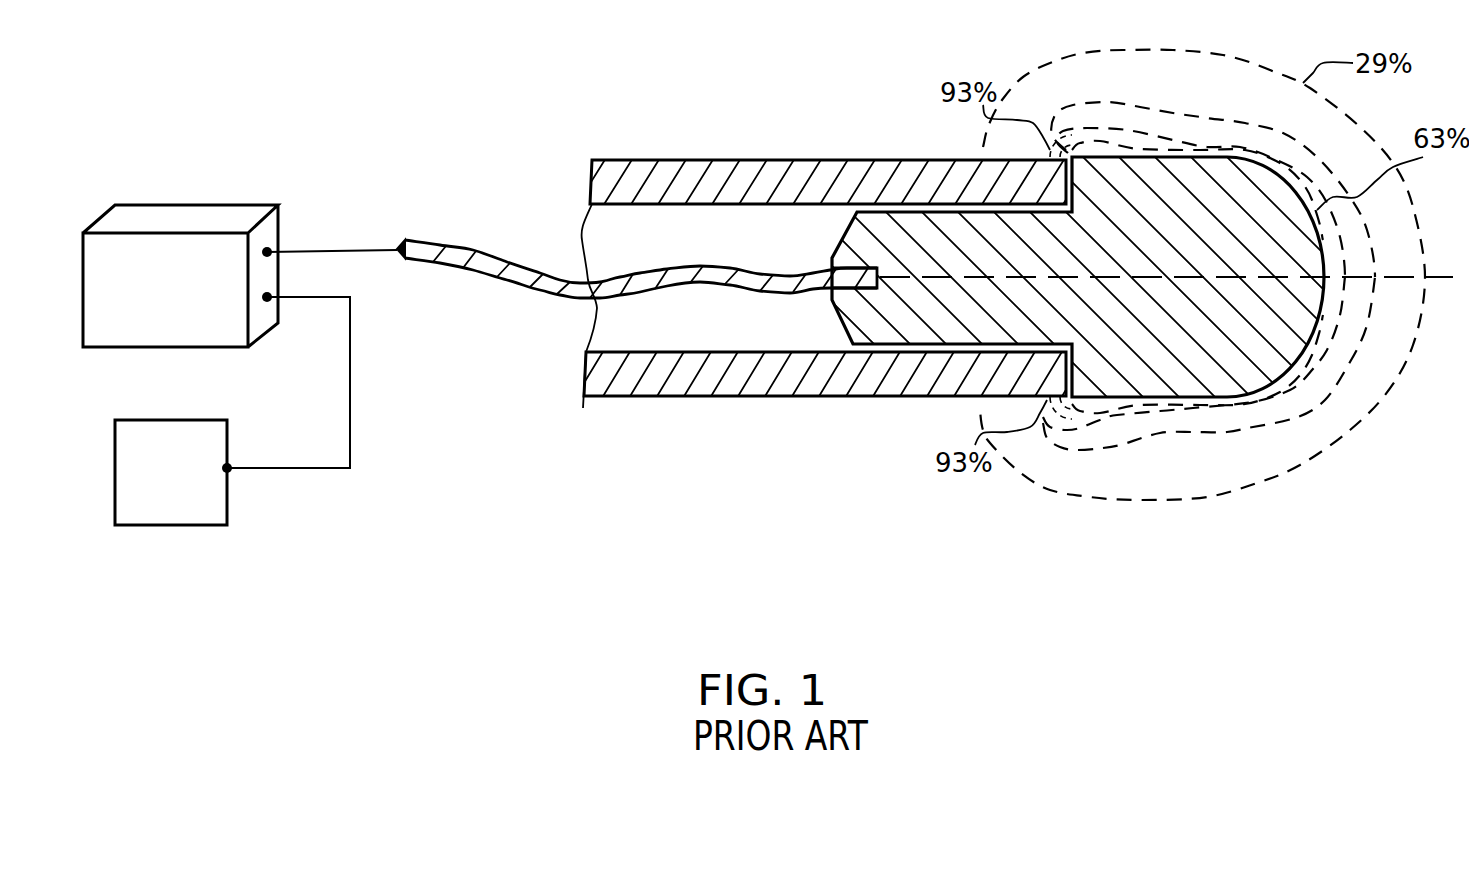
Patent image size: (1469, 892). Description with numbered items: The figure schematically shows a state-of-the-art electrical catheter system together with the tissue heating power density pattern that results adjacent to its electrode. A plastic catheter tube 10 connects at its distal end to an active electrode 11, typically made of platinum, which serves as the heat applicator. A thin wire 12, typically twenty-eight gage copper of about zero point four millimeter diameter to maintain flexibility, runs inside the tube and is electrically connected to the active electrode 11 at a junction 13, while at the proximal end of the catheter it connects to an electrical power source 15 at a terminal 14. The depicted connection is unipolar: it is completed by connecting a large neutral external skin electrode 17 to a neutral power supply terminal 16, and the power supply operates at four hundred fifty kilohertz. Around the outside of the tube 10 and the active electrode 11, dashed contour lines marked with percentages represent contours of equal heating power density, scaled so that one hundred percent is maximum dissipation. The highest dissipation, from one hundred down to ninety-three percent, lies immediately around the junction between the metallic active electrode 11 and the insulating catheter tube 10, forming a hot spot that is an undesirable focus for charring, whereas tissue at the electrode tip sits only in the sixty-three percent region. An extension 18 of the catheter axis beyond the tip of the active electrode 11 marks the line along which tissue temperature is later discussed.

The catheter tube 10 is at (670, 180).
The active electrode 11 is at (1291, 261).
The wire 12 is at (613, 296).
The junction 13 is at (823, 297).
The terminal 14 is at (267, 238).
The electrical power source 15 is at (168, 217).
The neutral power supply terminal 16 is at (267, 302).
The external skin electrode 17 is at (192, 484).
The extension of the catheter axis 18 is at (1435, 275).